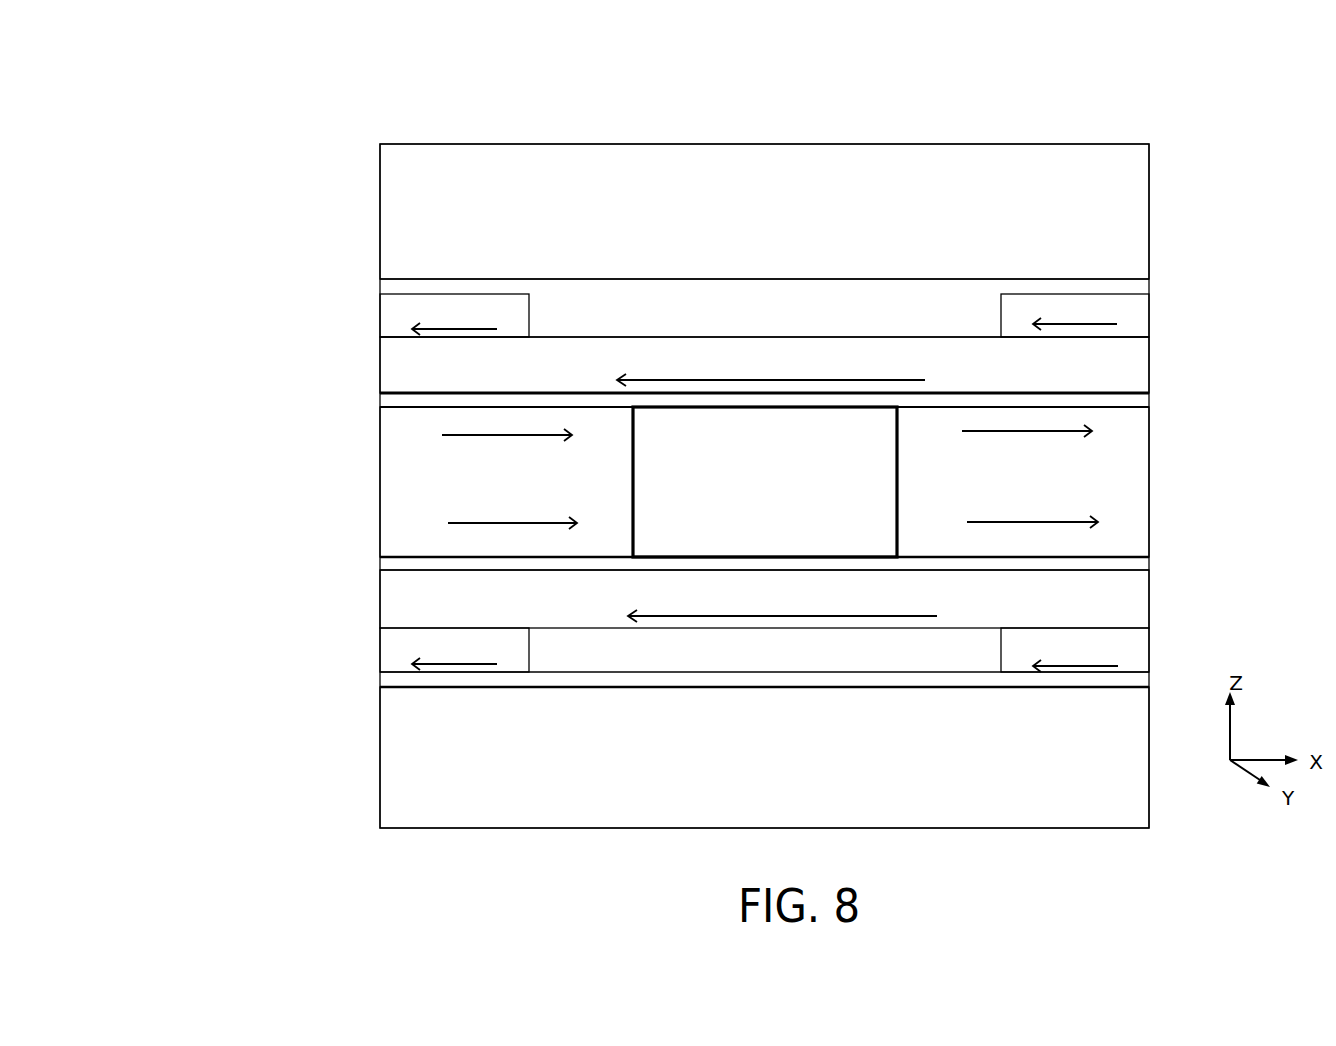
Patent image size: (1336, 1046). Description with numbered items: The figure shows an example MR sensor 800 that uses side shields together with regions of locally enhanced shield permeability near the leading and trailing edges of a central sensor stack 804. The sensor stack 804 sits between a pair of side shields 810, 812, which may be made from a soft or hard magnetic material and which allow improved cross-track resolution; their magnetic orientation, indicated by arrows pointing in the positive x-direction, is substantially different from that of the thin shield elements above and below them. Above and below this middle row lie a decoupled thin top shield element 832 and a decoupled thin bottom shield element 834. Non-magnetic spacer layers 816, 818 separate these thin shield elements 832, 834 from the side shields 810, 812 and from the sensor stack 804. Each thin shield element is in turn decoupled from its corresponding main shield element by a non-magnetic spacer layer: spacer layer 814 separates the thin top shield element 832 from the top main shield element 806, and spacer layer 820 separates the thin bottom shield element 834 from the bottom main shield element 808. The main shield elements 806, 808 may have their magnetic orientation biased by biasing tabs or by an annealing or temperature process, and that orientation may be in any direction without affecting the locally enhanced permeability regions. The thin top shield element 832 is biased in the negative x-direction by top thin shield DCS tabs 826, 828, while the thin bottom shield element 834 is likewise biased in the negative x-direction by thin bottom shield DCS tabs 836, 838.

The MR sensor 800 is at (324, 122).
The sensor stack 804 is at (745, 493).
The main shield element 806 is at (745, 223).
The main shield element 808 is at (745, 782).
The side shield 810 is at (488, 493).
The side shield 812 is at (1004, 493).
The non-magnetic spacer layer 814 is at (405, 278).
The non-magnetic spacer layer 816 is at (380, 398).
The non-magnetic spacer layer 818 is at (380, 562).
The non-magnetic spacer layer 820 is at (427, 689).
The top thin shield DCS tab 826 is at (434, 326).
The top thin shield DCS tab 828 is at (1054, 324).
The decoupled thin top shield element 832 is at (764, 365).
The decoupled thin bottom shield element 834 is at (745, 609).
The thin bottom shield DCS tab 836 is at (434, 660).
The thin bottom shield DCS tab 838 is at (1056, 662).